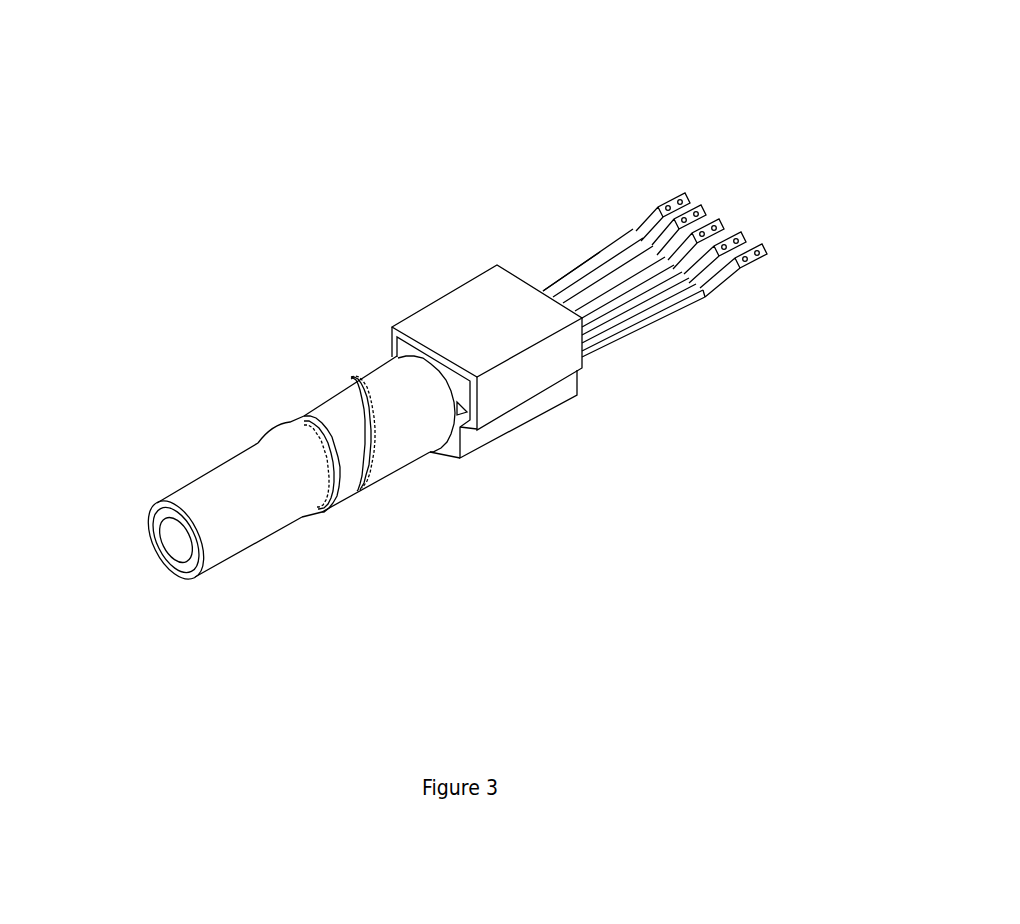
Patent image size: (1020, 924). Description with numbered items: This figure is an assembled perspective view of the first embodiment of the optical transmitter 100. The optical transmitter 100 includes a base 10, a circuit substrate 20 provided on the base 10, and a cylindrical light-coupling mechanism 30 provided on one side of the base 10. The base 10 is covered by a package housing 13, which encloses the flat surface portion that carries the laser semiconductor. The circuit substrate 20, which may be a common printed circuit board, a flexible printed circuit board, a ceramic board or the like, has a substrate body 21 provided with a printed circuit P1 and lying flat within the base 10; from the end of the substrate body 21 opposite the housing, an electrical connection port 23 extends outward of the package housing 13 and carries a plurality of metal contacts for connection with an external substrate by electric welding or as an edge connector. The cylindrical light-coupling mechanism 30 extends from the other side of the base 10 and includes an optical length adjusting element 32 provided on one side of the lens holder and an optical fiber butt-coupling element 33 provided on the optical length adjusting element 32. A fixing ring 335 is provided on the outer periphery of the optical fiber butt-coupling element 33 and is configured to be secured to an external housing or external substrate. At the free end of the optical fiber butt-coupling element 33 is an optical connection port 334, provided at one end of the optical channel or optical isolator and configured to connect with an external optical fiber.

The optical transmitter 100 is at (863, 41).
The base 10 is at (502, 337).
The package housing 13 is at (457, 297).
The circuit substrate 20 is at (684, 247).
The substrate body 21 is at (620, 250).
The electrical connection port 23 is at (702, 203).
The printed circuit P1 is at (565, 280).
The cylindrical light-coupling mechanism 30 is at (284, 490).
The optical length adjusting element 32 is at (383, 462).
The optical fiber butt-coupling element 33 is at (189, 572).
The optical connection port 334 is at (167, 563).
The fixing ring 335 is at (288, 423).